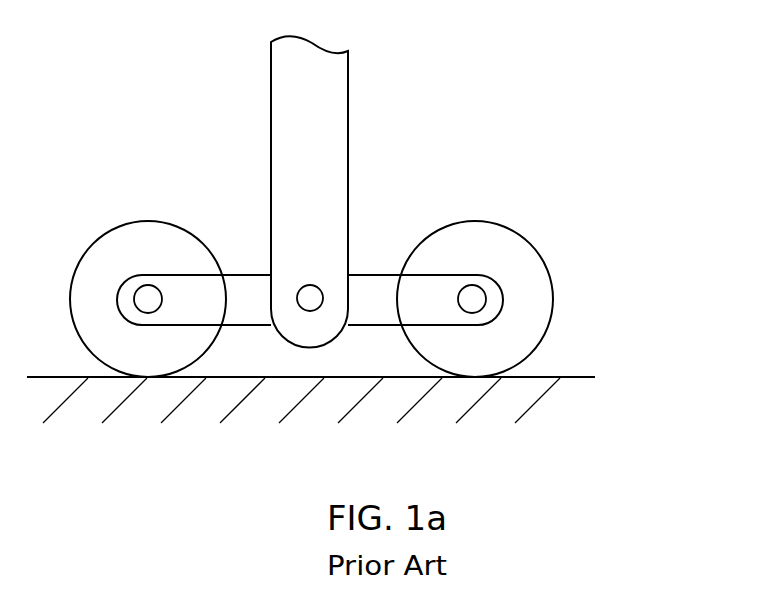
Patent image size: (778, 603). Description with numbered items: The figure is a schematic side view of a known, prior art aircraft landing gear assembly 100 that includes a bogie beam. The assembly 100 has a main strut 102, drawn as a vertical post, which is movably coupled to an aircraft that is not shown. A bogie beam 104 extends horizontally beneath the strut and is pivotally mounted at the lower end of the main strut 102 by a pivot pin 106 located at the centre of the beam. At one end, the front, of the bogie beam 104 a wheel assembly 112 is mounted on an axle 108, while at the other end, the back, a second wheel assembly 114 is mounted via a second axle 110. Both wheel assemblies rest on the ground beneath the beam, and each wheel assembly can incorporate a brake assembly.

The aircraft landing gear assembly 100 is at (385, 247).
The main strut 102 is at (333, 140).
The bogie beam 104 is at (362, 313).
The pivot pin 106 is at (310, 302).
The axle 108 is at (145, 297).
The second axle 110 is at (472, 298).
The wheel assembly 112 is at (190, 228).
The second wheel assembly 114 is at (520, 233).